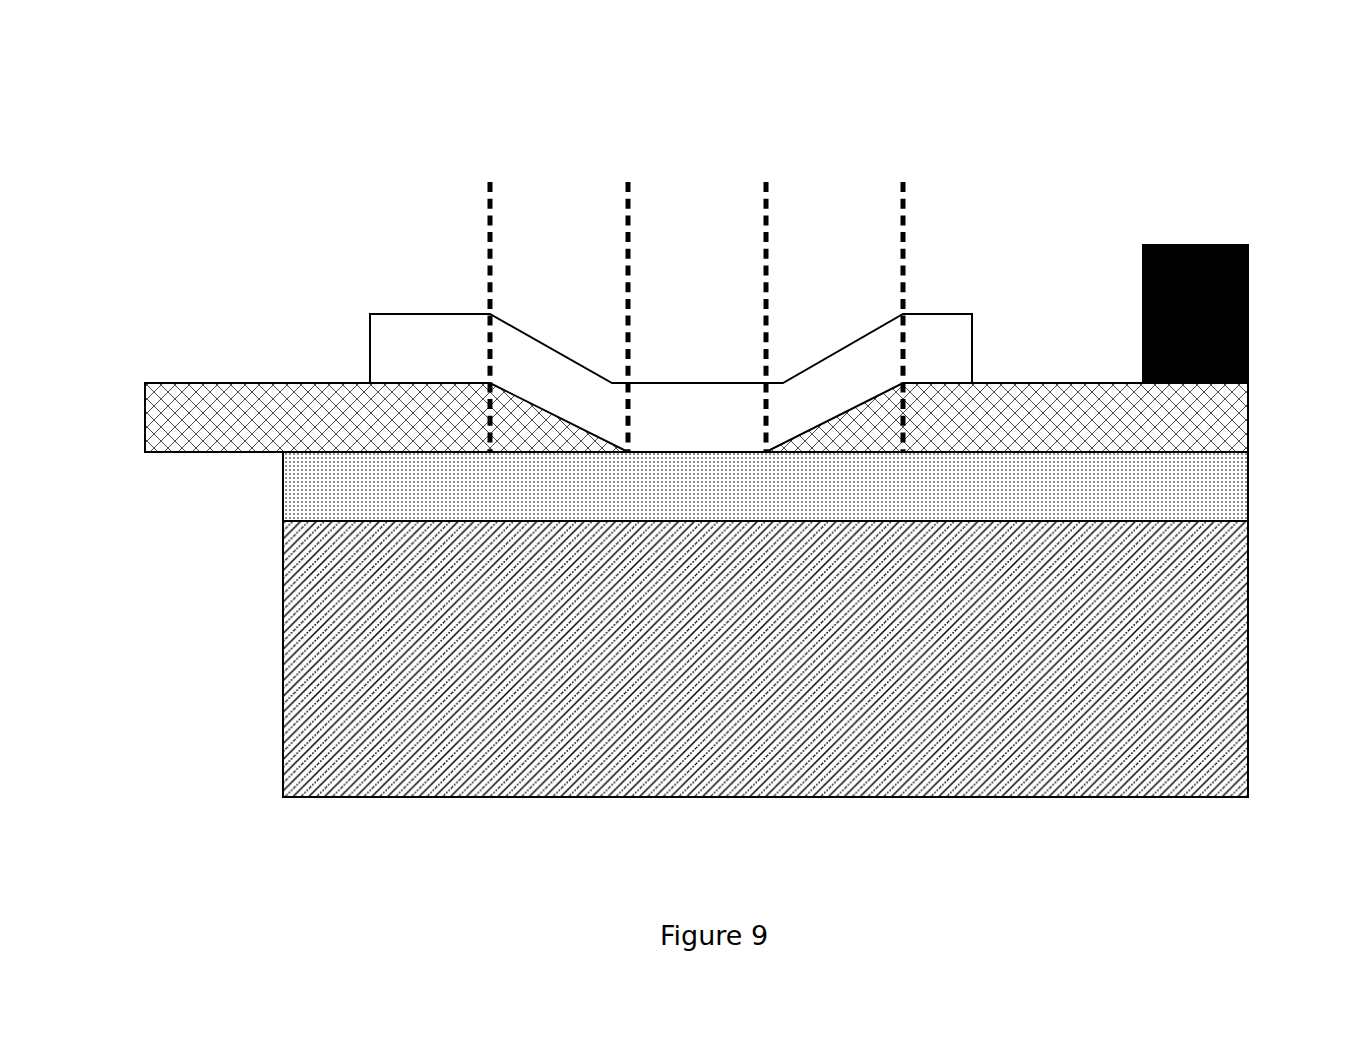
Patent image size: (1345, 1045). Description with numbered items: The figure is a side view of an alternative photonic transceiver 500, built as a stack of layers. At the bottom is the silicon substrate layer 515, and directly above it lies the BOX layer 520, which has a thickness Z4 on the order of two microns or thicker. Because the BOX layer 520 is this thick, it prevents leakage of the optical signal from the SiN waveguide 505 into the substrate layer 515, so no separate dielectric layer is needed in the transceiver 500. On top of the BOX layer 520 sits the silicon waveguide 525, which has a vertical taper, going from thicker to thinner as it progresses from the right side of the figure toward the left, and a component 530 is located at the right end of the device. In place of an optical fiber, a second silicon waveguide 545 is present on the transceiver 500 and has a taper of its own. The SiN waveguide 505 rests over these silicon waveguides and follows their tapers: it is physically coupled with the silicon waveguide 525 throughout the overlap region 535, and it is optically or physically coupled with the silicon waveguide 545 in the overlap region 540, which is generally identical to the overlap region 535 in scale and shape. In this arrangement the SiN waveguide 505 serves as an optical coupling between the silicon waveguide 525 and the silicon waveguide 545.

The photonic transceiver 500 is at (350, 196).
The SiN waveguide 505 is at (722, 395).
The substrate layer 515 is at (1005, 762).
The BOX layer 520 is at (1213, 487).
The silicon waveguide 525 is at (1197, 417).
The component 530 is at (1200, 245).
The overlap region 535 is at (810, 136).
The overlap region 540 is at (583, 133).
The silicon waveguide 545 is at (223, 420).
The thickness Z4 is at (973, 462).